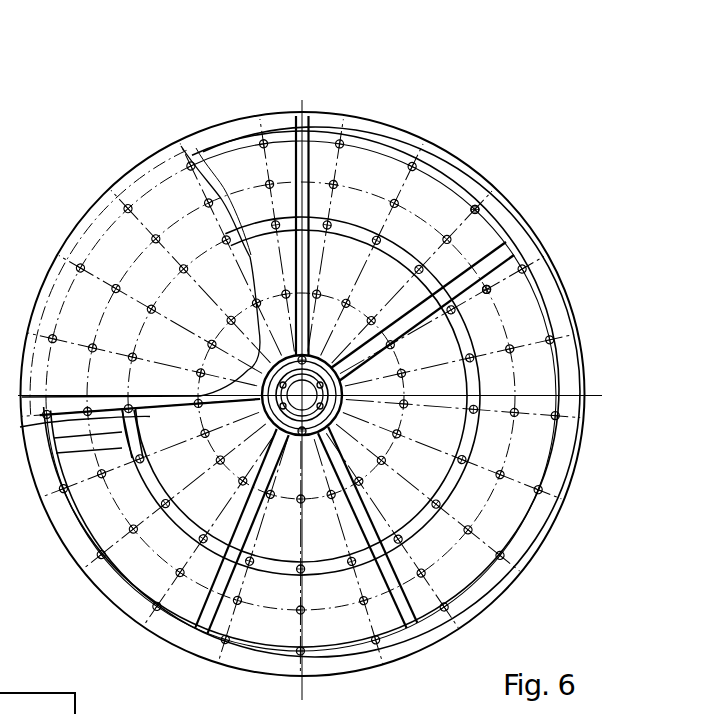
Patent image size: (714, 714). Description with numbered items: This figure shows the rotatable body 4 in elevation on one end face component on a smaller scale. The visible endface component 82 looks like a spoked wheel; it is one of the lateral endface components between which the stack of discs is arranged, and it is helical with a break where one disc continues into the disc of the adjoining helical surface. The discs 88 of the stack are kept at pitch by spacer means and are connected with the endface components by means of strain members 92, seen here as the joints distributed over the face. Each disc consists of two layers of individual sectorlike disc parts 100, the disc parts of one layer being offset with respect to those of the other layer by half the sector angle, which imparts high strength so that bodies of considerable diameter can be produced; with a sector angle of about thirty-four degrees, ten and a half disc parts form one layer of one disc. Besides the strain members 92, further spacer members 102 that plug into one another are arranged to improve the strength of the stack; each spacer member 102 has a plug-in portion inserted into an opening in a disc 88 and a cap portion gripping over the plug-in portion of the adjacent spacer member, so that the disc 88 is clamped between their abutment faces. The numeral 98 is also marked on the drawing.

The body 4 is at (412, 116).
The endface component 82 is at (512, 243).
The disc 88 is at (115, 713).
The strain member 92 is at (476, 205).
The circumferential member 98 is at (152, 713).
The sectorlike disc part 100 is at (92, 228).
The spacer member 102 is at (491, 292).